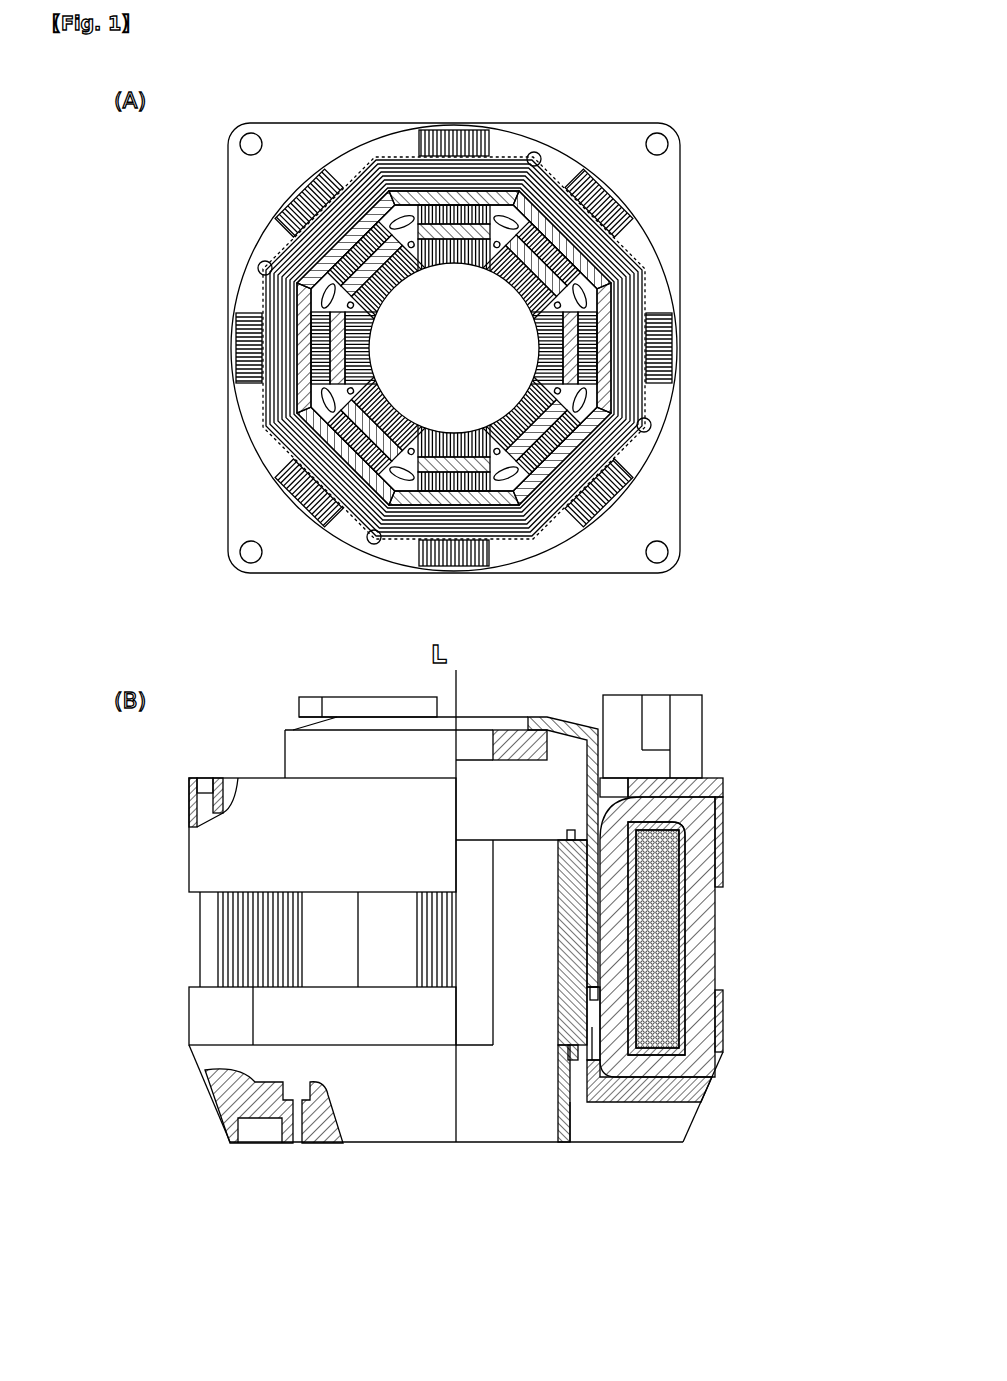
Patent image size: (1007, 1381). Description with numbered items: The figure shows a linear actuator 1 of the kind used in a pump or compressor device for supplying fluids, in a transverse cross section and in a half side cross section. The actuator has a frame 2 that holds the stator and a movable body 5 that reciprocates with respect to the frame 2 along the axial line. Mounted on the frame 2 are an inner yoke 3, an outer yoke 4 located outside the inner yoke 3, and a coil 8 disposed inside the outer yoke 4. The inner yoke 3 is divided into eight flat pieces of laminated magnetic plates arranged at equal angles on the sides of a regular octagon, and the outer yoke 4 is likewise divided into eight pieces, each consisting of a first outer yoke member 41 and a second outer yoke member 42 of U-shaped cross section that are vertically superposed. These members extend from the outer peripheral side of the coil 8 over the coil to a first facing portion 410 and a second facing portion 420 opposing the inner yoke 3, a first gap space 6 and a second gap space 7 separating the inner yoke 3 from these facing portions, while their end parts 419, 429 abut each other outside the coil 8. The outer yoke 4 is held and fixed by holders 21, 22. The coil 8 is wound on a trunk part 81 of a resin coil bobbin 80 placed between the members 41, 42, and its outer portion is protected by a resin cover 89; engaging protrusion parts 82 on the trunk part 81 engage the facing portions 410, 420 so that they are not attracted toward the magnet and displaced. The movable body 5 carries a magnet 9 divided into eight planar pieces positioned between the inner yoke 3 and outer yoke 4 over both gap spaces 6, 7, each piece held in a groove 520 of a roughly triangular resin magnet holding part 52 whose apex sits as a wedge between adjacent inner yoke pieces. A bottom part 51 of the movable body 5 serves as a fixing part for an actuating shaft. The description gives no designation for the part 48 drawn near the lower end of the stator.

The linear actuator 1 is at (690, 121).
The frame 2 is at (675, 1123).
The inner yoke 3 is at (562, 353).
The outer yoke 4 is at (633, 233).
The movable body 5 is at (542, 705).
The first gap space 6 is at (562, 325).
The second gap space 7 is at (593, 1030).
The coil 8 is at (560, 248).
The magnet 9 is at (563, 378).
The holder 21 is at (658, 777).
The holder 22 is at (680, 1088).
The first outer yoke member 41 is at (715, 918).
The second outer yoke member 42 is at (723, 980).
The core bottom portion 48 is at (613, 1093).
The bottom part 51 is at (512, 735).
The magnet holding part 52 is at (598, 440).
The coil bobbin 80 is at (628, 257).
The trunk part 81 is at (632, 888).
The engaging protrusion part 82 is at (607, 943).
The cover 89 is at (603, 293).
The first facing portion 410 is at (598, 352).
The end part 419 is at (713, 907).
The second facing portion 420 is at (670, 1007).
The end part 429 is at (713, 957).
The groove 520 is at (585, 393).